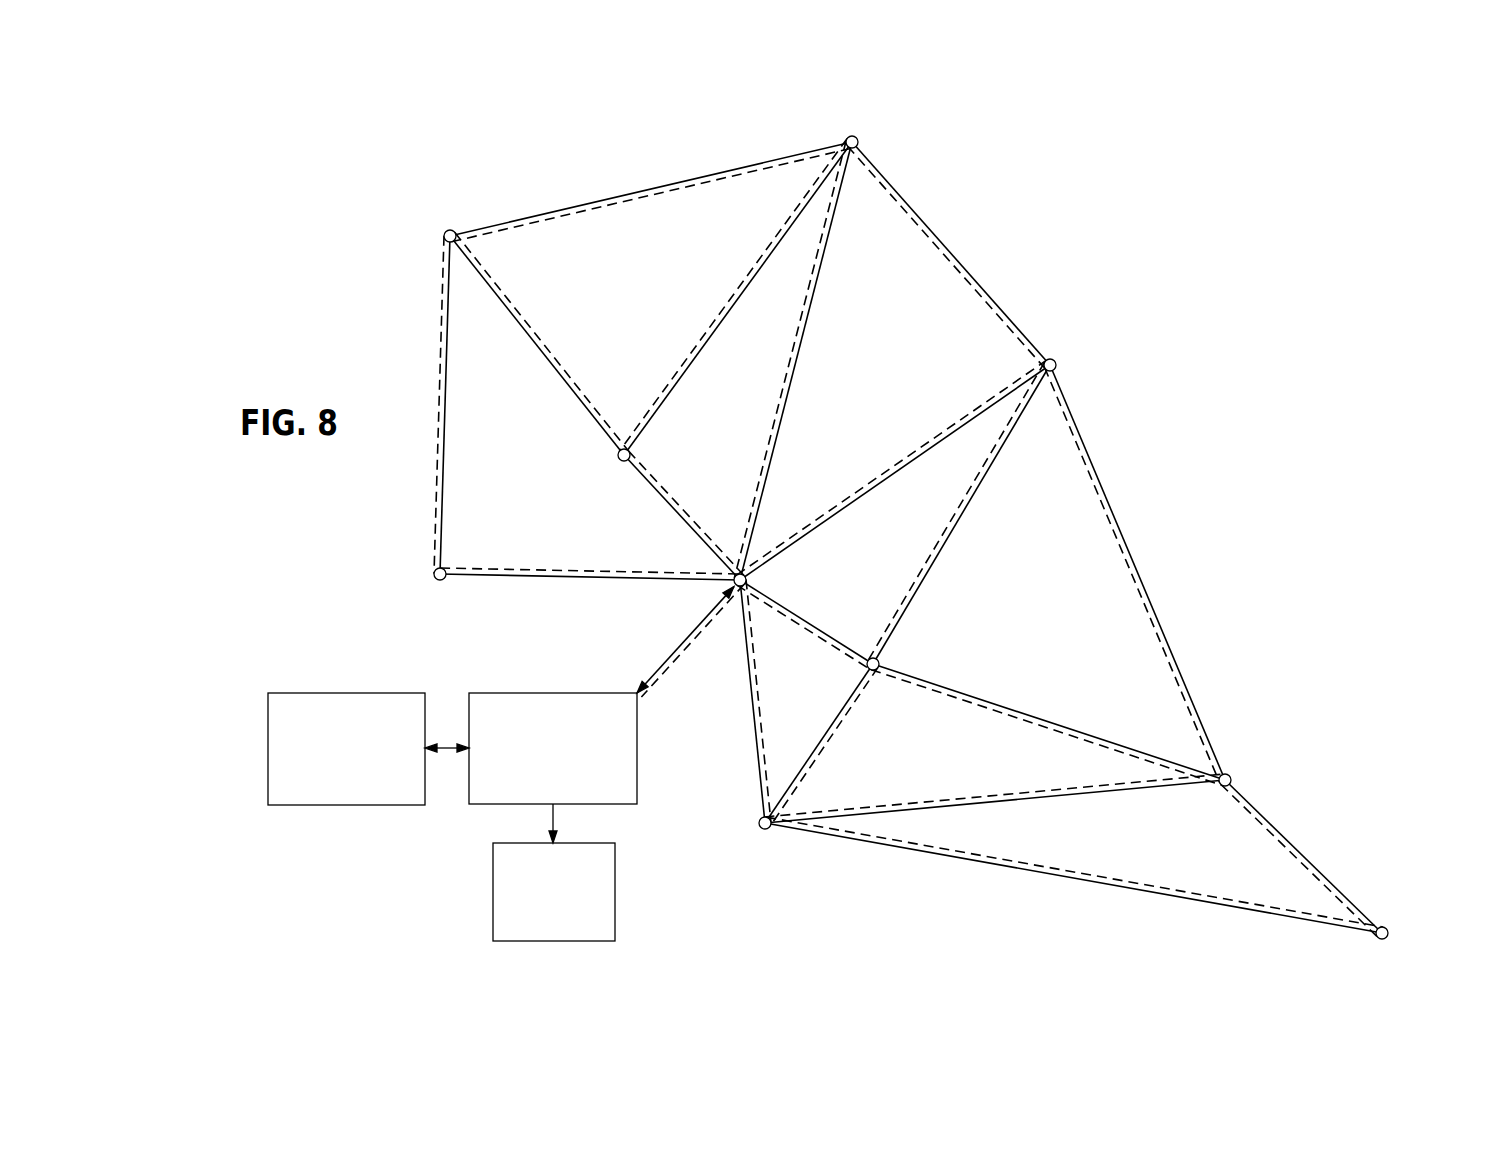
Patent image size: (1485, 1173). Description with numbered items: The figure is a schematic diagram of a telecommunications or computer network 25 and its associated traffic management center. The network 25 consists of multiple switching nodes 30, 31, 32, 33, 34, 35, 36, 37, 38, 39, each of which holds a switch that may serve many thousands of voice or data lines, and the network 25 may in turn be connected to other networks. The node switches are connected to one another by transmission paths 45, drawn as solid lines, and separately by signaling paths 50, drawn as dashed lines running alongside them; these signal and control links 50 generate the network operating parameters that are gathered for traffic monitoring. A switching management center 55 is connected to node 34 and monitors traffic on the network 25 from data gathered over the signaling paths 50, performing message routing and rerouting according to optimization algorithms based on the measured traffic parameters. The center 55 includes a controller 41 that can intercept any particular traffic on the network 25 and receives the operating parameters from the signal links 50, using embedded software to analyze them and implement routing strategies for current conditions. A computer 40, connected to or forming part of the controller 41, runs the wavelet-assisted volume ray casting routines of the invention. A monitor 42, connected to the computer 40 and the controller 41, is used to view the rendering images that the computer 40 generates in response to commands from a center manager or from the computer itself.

The telecommunications or computer network 25 is at (910, 534).
The switching node 30 is at (444, 236).
The switching node 31 is at (858, 140).
The switching node 32 is at (619, 460).
The switching node 33 is at (433, 574).
The switching node 34 is at (747, 581).
The switching node 35 is at (1057, 363).
The switching node 36 is at (880, 664).
The switching node 37 is at (758, 823).
The switching node 38 is at (1232, 780).
The switching node 39 is at (1389, 933).
The computer 40 is at (345, 693).
The controller 41 is at (552, 693).
The monitor 42 is at (615, 890).
The transmission paths 45 is at (1118, 504).
The signaling paths 50 is at (1133, 583).
The switching management center 55 is at (434, 792).